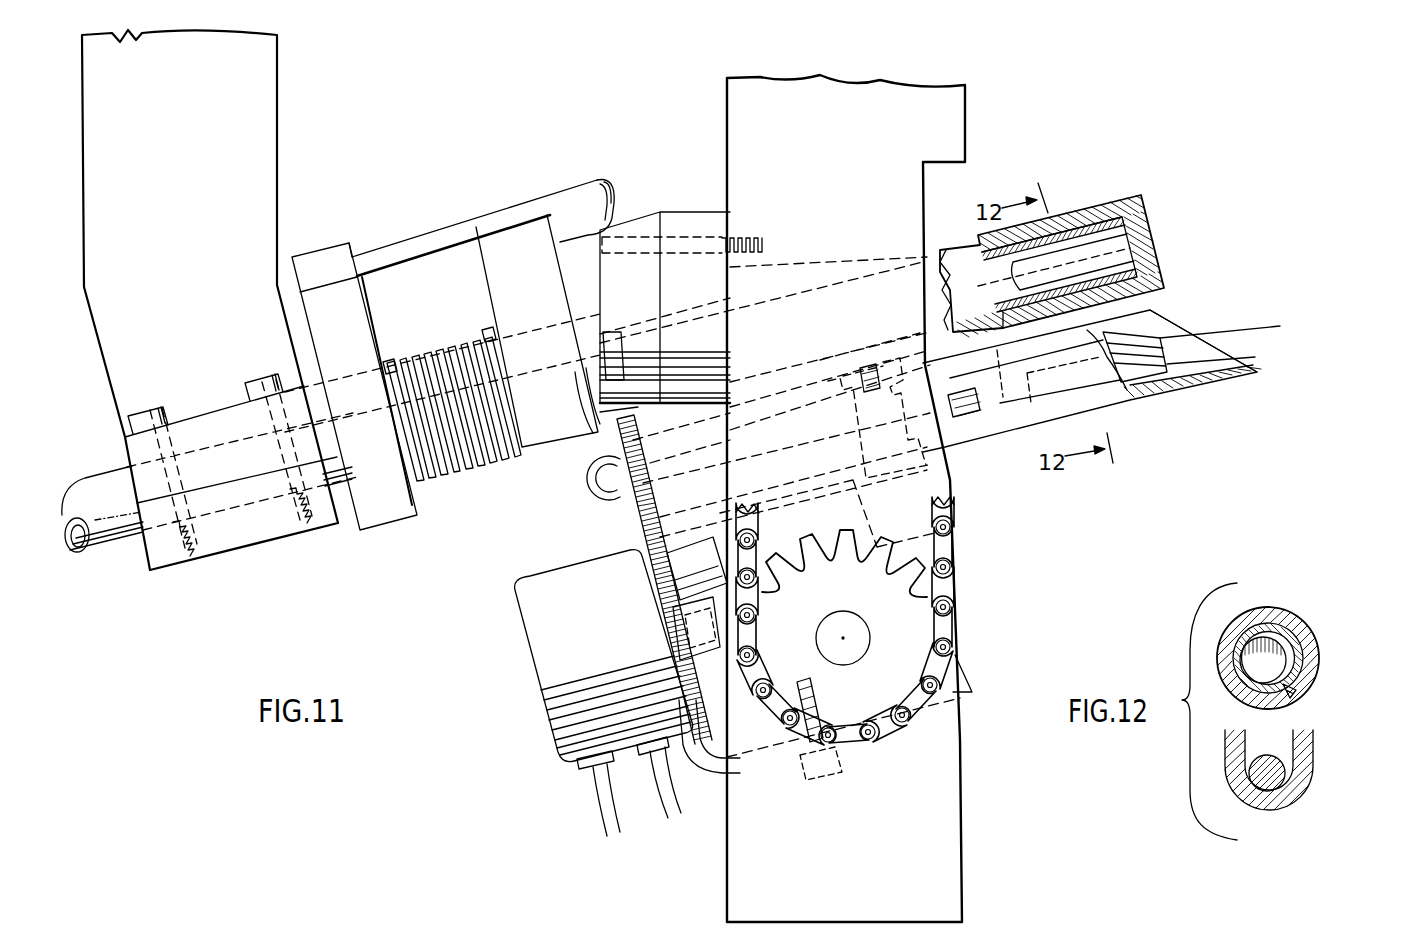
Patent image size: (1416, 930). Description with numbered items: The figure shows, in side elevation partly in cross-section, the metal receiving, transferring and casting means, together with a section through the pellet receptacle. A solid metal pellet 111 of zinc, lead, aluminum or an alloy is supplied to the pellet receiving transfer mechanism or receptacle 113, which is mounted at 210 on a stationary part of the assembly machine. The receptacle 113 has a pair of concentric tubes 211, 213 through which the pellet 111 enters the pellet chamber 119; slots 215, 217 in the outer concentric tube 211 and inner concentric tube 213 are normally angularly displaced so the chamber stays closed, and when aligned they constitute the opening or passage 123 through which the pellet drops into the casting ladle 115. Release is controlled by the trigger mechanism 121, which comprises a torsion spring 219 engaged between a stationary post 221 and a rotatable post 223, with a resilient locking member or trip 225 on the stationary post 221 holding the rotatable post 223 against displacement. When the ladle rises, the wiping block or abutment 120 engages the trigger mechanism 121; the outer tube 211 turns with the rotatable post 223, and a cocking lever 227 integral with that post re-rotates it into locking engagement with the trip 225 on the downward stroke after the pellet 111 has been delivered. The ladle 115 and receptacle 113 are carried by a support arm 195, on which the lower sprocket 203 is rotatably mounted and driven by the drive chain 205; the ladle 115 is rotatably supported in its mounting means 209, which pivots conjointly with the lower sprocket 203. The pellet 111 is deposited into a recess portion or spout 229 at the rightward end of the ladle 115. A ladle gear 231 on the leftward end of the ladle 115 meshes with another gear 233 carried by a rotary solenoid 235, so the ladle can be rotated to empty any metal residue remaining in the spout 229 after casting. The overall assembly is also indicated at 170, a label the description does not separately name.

In FIG. 11, the mounting 210 is at (268, 136).
In FIG. 11, the trigger mechanism 121 is at (566, 182).
In FIG. 11, the wiping block or abutment 120 is at (699, 218).
In FIG. 11, the pellet receiving transfer mechanism 113 is at (945, 241).
In FIG. 11, the outer concentric tube 211 is at (1079, 214).
In FIG. 12, the outer concentric tube 211 is at (1297, 627).
In FIG. 11, the inner concentric tube 213 is at (1115, 214).
In FIG. 12, the inner concentric tube 213 is at (1273, 627).
In FIG. 11, the pellet chamber 119 is at (1122, 238).
In FIG. 11, the slot 217 is at (1160, 266).
In FIG. 12, the slot 217 is at (1245, 695).
In FIG. 11, the slot 215 is at (1165, 278).
In FIG. 12, the slot 215 is at (1297, 700).
In FIG. 11, the opening or passage 123 is at (1140, 301).
In FIG. 12, the opening or passage 123 is at (1318, 690).
In FIG. 11, the pellet 111 is at (1235, 331).
In FIG. 12, the pellet 111 is at (1267, 760).
In FIG. 11, the recess portion or spout 229 is at (1260, 368).
In FIG. 11, the casting ladle 115 is at (1187, 399).
In FIG. 12, the casting ladle 115 is at (1303, 805).
In FIG. 11, the resilient locking member or trip 225 is at (398, 245).
In FIG. 11, the rotatable post 223 is at (490, 275).
In FIG. 11, the stationary post 221 is at (374, 325).
In FIG. 11, the cocking lever 227 is at (598, 443).
In FIG. 11, the ladle gear 231 is at (598, 485).
In FIG. 11, the torsion spring 219 is at (443, 482).
In FIG. 11, the mounting means 209 is at (850, 503).
In FIG. 11, the drive chain 205 is at (950, 548).
In FIG. 11, the lower sprocket 203 is at (860, 594).
In FIG. 11, the rotary solenoid 235 is at (608, 647).
In FIG. 11, the gear 233 is at (686, 672).
In FIG. 11, the drive assembly 170 is at (501, 662).
In FIG. 11, the support arm 195 is at (963, 837).